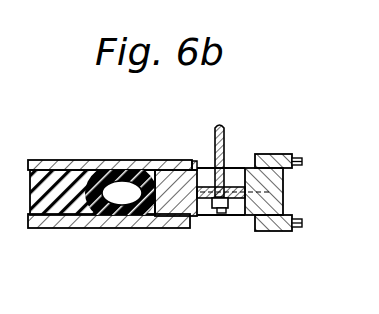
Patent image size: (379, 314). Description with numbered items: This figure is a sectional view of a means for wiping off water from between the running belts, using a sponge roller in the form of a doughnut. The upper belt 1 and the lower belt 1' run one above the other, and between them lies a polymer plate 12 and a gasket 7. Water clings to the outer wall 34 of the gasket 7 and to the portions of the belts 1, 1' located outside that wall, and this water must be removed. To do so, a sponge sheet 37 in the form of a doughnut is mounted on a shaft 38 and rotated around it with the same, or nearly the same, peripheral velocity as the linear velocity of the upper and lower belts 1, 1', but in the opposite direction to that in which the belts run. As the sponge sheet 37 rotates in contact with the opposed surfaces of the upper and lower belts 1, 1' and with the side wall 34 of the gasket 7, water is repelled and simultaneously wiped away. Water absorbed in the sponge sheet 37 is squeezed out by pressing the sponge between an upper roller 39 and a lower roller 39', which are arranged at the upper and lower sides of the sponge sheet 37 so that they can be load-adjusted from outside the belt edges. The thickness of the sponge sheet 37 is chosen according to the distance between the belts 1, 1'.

The upper belt 1 is at (110, 144).
The lower belt 1' is at (103, 238).
The polymer plate 12 is at (55, 173).
The gasket 7 is at (120, 178).
The outer wall of gasket 34 is at (153, 170).
The sponge sheet 37 is at (184, 178).
The shaft 38 is at (224, 140).
The upper roller 39 is at (275, 164).
The lower roller 39' is at (278, 245).